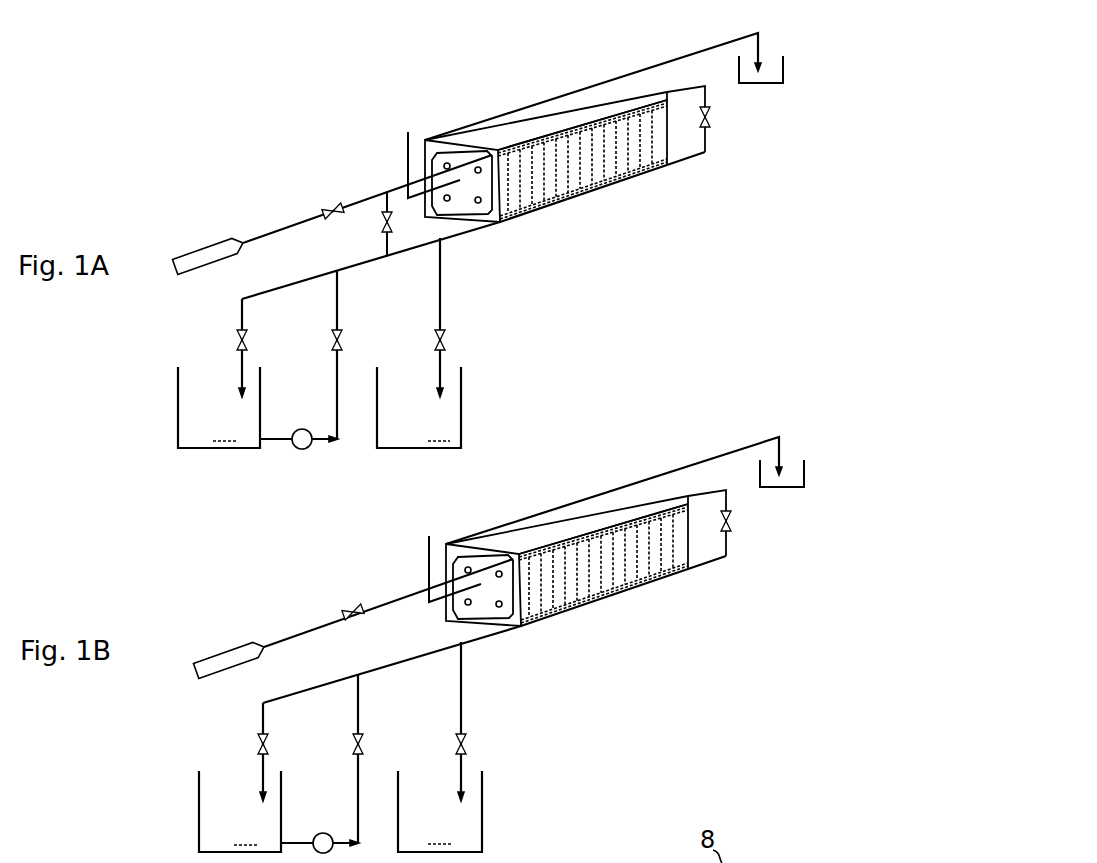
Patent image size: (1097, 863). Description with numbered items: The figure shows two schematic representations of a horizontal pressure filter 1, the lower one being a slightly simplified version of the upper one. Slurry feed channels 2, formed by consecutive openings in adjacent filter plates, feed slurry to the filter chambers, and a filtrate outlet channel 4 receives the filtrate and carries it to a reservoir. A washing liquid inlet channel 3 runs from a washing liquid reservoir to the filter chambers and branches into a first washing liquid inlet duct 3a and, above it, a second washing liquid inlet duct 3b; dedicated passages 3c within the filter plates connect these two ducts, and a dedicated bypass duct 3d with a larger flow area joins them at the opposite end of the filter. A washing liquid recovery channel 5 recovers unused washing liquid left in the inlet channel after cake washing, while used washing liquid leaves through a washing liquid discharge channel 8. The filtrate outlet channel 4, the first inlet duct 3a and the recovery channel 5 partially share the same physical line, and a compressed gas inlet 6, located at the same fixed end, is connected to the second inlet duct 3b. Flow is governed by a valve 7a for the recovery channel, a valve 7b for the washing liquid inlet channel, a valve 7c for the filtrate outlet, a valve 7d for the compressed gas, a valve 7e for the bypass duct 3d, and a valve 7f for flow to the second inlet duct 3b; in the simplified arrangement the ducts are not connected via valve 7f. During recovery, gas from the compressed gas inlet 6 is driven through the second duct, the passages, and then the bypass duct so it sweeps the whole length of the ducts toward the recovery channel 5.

In FIG. 1A, the horizontal pressure filter 1 is at (780, 326).
In FIG. 1B, the horizontal pressure filter 1 is at (662, 613).
In FIG. 1A, the slurry feed channel 2 is at (408, 132).
In FIG. 1B, the slurry feed channel 2 is at (451, 540).
In FIG. 1A, the washing liquid inlet channel 3 is at (337, 412).
In FIG. 1B, the washing liquid inlet channel 3 is at (320, 763).
In FIG. 1A, the first washing liquid inlet duct 3a is at (553, 207).
In FIG. 1B, the first washing liquid inlet duct 3a is at (604, 624).
In FIG. 1A, the second washing liquid inlet duct 3b is at (551, 142).
In FIG. 1B, the second washing liquid inlet duct 3b is at (603, 511).
In FIG. 1A, the dedicated passages 3c is at (612, 168).
In FIG. 1B, the dedicated passages 3c is at (603, 577).
In FIG. 1A, the dedicated bypass duct 3d is at (705, 140).
In FIG. 1B, the dedicated bypass duct 3d is at (543, 596).
In FIG. 1A, the filtrate outlet channel 4 is at (440, 372).
In FIG. 1B, the filtrate outlet channel 4 is at (500, 721).
In FIG. 1A, the washing liquid recovery channel 5 is at (242, 368).
In FIG. 1B, the washing liquid recovery channel 5 is at (215, 752).
In FIG. 1A, the compressed gas inlet 6 is at (288, 223).
In FIG. 1B, the compressed gas inlet 6 is at (353, 619).
In FIG. 1A, the valve 7a is at (238, 331).
In FIG. 1B, the valve 7a is at (205, 730).
In FIG. 1A, the valve 7b is at (335, 337).
In FIG. 1B, the valve 7b is at (330, 742).
In FIG. 1A, the valve 7c is at (443, 333).
In FIG. 1B, the valve 7c is at (494, 715).
In FIG. 1A, the valve 7d is at (333, 204).
In FIG. 1B, the valve 7d is at (333, 581).
In FIG. 1A, the valve 7e is at (709, 117).
In FIG. 1B, the valve 7e is at (772, 527).
In FIG. 1A, the valve 7f is at (387, 212).
In FIG. 1A, the washing liquid discharge channel 8 is at (698, 52).
In FIG. 1B, the washing liquid discharge channel 8 is at (625, 468).